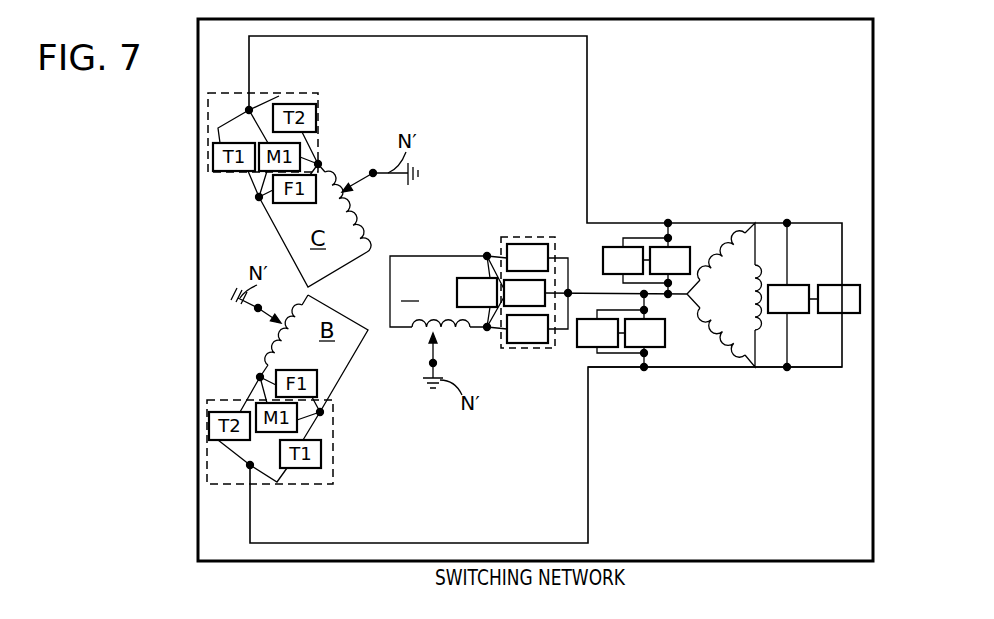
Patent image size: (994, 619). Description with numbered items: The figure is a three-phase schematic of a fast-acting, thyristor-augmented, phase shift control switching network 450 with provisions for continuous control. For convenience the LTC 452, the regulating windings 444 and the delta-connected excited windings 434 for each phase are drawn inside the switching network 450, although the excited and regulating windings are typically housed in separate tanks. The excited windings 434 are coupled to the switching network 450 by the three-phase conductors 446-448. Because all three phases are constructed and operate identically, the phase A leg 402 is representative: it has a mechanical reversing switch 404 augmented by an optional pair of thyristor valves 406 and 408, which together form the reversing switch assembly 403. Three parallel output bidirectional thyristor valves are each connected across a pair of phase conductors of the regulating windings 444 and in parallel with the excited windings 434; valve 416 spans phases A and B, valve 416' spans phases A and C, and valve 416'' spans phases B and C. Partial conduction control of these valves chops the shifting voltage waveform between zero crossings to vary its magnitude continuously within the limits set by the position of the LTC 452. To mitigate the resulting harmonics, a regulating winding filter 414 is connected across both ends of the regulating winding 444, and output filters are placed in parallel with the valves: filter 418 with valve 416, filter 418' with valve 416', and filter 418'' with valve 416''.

The phase A leg 402 is at (443, 269).
The reversing switch assembly 403 is at (523, 348).
The mechanical reversing switch 404 is at (540, 300).
The thyristor valve 406 is at (543, 250).
The thyristor valve 408 is at (510, 337).
The regulating winding filter 414 is at (458, 280).
The T4 thyristor valve 416 is at (575, 359).
The T4 thyristor valve 416' is at (617, 225).
The T4 thyristor valve 416'' is at (802, 272).
The F2 filter 418 is at (687, 366).
The F2 filter 418' is at (684, 225).
The F2 filter 418'' is at (824, 322).
The excited windings 434 is at (742, 205).
The regulating windings 444 is at (420, 328).
The three-phase conductors 446-448 is at (740, 380).
The switching network 450 is at (213, 497).
The LTC 452 is at (428, 350).